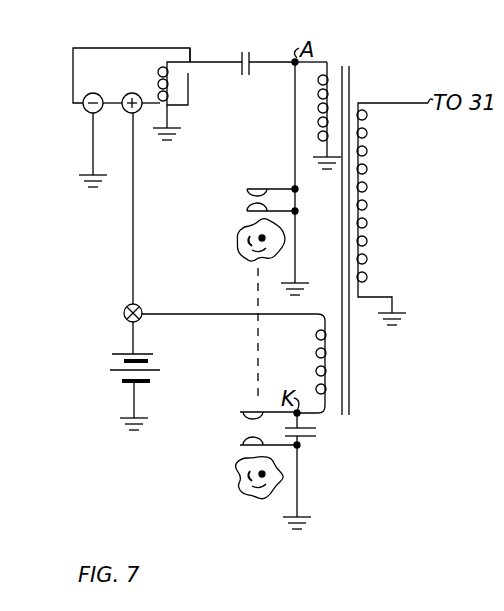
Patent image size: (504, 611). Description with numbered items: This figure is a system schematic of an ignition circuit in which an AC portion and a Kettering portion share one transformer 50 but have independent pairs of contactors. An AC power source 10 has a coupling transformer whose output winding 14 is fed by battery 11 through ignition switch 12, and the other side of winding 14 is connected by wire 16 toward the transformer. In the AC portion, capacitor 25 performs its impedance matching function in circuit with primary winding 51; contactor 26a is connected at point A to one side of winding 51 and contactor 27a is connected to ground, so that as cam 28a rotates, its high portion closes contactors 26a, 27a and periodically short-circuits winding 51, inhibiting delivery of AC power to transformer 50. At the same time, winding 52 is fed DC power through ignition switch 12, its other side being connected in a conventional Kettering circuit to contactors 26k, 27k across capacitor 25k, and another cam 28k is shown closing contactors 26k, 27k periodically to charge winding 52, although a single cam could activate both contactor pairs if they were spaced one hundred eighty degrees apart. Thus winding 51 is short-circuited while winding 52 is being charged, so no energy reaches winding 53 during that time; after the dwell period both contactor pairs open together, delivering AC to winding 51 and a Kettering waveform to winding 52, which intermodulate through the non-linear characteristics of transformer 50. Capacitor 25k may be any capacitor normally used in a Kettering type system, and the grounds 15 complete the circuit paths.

The AC power source 10 is at (109, 76).
The battery 11 is at (151, 353).
The ignition switch 12 is at (141, 308).
The output winding 14 is at (190, 86).
The ground 15 is at (84, 186).
The wire 16 is at (203, 52).
The capacitor 25 is at (254, 30).
The capacitor 25k is at (309, 439).
The contactor 26a is at (246, 189).
The contactor 27a is at (247, 211).
The cam 28a is at (242, 260).
The contactor 26k is at (243, 412).
The contactor 27k is at (242, 444).
The cam 28k is at (242, 495).
The transformer 50 is at (354, 58).
The primary winding 51 is at (323, 124).
The winding 52 is at (316, 356).
The winding 53 is at (369, 190).